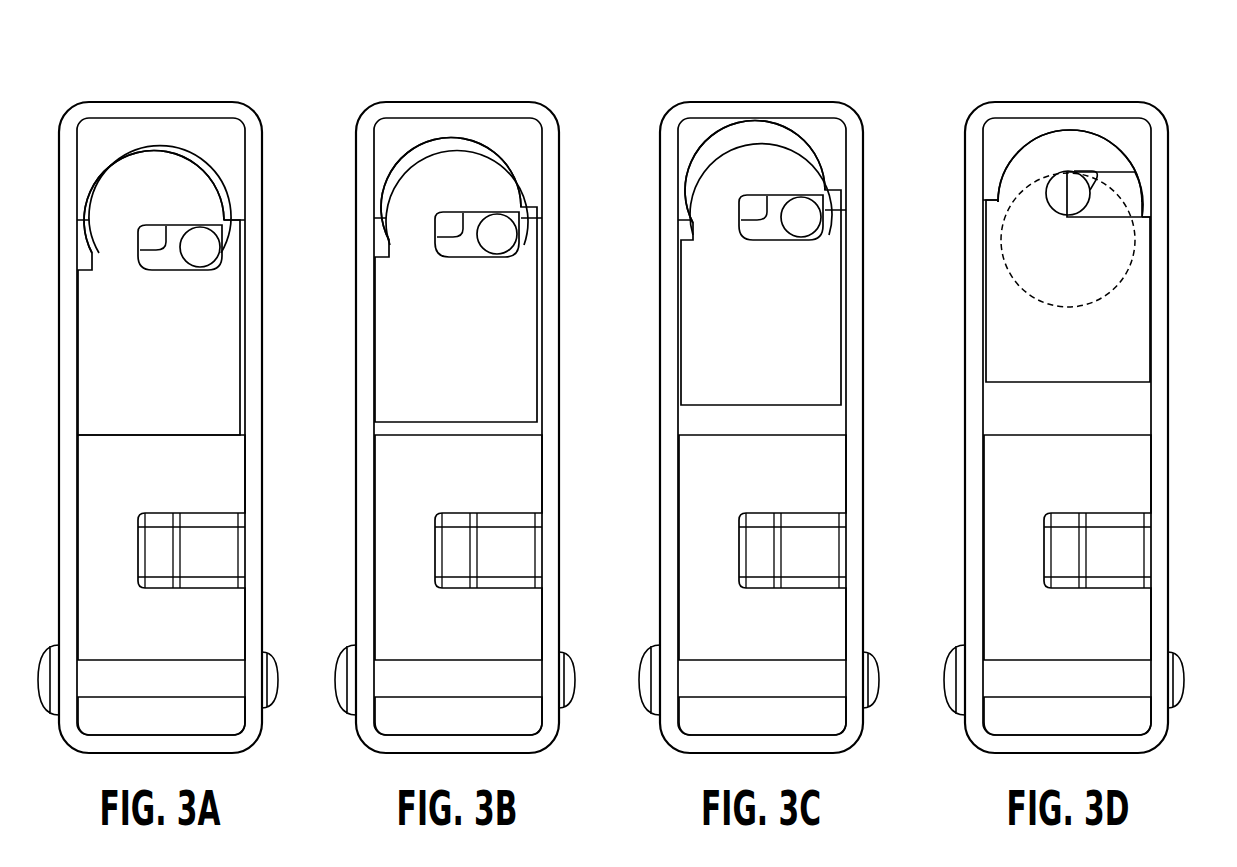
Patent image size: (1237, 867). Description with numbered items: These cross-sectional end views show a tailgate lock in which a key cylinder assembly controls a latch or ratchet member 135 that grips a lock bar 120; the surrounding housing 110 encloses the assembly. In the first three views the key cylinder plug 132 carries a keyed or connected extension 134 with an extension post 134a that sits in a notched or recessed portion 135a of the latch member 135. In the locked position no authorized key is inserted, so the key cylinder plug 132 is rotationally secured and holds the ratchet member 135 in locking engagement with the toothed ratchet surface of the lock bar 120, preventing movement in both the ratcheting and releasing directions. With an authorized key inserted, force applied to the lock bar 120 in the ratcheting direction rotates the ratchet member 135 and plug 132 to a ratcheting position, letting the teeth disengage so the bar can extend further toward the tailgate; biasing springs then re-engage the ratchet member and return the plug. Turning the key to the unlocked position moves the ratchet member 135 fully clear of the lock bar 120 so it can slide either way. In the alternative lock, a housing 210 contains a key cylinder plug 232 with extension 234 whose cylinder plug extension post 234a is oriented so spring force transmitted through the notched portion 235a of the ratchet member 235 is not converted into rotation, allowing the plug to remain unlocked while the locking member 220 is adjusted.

In FIG. 3A, the housing 110 is at (137, 102).
In FIG. 3B, the housing 110 is at (455, 391).
In FIG. 3C, the housing 110 is at (759, 391).
In FIG. 3A, the lock bar 120 is at (108, 573).
In FIG. 3B, the lock bar 120 is at (429, 585).
In FIG. 3C, the lock bar 120 is at (733, 585).
In FIG. 3A, the key cylinder plug 132 is at (176, 172).
In FIG. 3B, the key cylinder plug 132 is at (500, 137).
In FIG. 3C, the key cylinder plug 132 is at (804, 132).
In FIG. 3A, the extension 134 is at (154, 202).
In FIG. 3B, the extension 134 is at (451, 189).
In FIG. 3C, the extension 134 is at (755, 172).
In FIG. 3A, the extension post 134a is at (210, 244).
In FIG. 3B, the extension post 134a is at (544, 228).
In FIG. 3C, the extension post 134a is at (848, 222).
In FIG. 3A, the latch member 135 is at (164, 293).
In FIG. 3B, the latch member 135 is at (461, 280).
In FIG. 3C, the latch member 135 is at (765, 263).
In FIG. 3A, the notched portion 135a is at (150, 245).
In FIG. 3B, the notched portion 135a is at (387, 251).
In FIG. 3C, the notched portion 135a is at (691, 242).
In FIG. 3D, the housing 210 is at (1064, 391).
In FIG. 3D, the locking member 220 is at (1039, 585).
In FIG. 3D, the key cylinder plug 232 is at (1111, 116).
In FIG. 3D, the socket member 234 is at (1068, 240).
In FIG. 3D, the cylinder plug extension post 234a is at (1148, 206).
In FIG. 3D, the ratchet member 235 is at (1068, 255).
In FIG. 3D, the notched portion 235a is at (1007, 172).